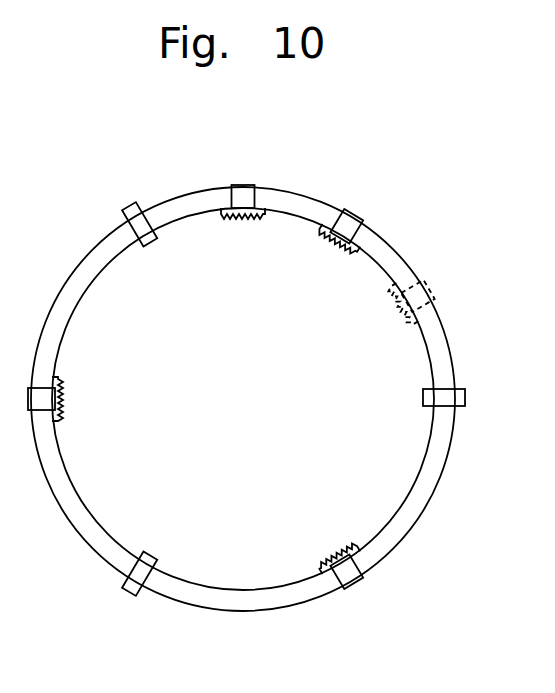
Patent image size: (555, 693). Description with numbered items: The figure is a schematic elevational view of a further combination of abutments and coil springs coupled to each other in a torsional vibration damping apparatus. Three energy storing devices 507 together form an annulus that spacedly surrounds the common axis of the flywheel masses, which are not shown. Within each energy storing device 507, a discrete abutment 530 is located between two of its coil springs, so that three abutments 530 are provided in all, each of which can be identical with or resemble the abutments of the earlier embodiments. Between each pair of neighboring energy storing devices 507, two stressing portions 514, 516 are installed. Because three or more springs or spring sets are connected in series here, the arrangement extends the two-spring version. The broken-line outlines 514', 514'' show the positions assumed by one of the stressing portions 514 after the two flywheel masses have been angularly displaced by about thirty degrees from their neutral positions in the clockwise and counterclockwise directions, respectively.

The energy storing device 507 is at (428, 332).
The abutment 530 is at (138, 220).
The stressing portion 514 is at (241, 397).
The stressing portion 516 is at (345, 222).
The displaced position of stressing portion 514' is at (375, 310).
The displaced position of stressing portion 514'' is at (254, 171).